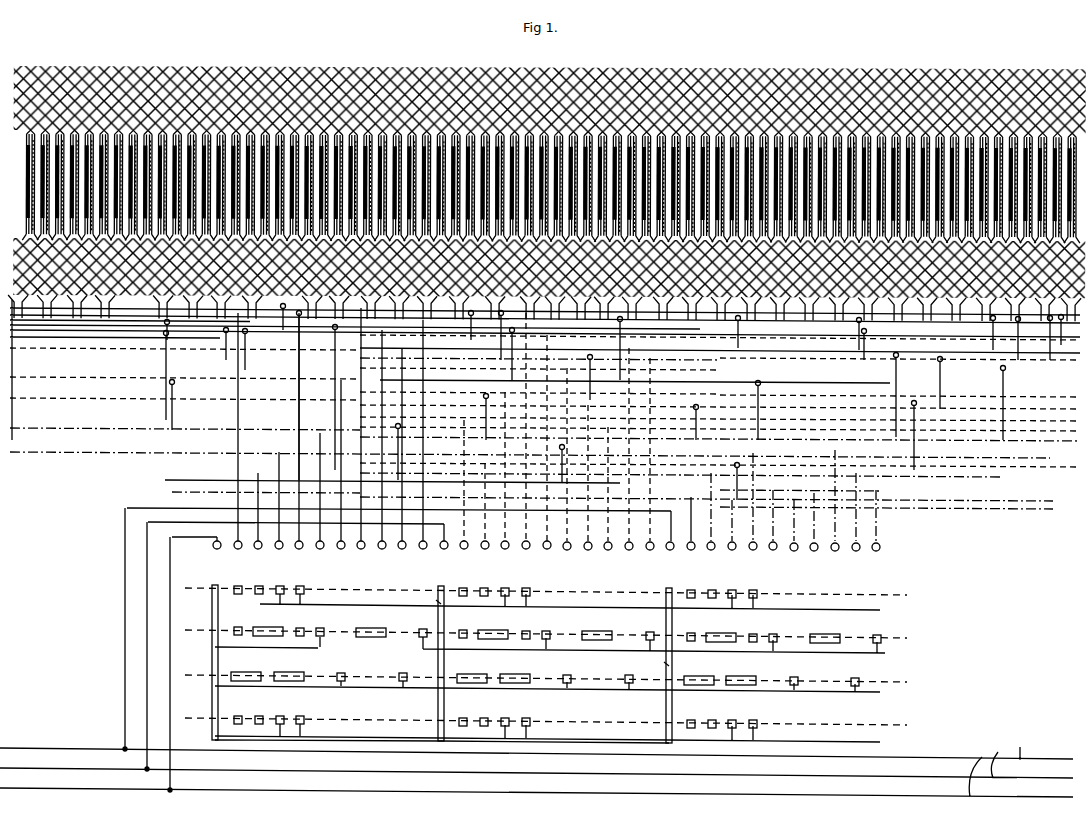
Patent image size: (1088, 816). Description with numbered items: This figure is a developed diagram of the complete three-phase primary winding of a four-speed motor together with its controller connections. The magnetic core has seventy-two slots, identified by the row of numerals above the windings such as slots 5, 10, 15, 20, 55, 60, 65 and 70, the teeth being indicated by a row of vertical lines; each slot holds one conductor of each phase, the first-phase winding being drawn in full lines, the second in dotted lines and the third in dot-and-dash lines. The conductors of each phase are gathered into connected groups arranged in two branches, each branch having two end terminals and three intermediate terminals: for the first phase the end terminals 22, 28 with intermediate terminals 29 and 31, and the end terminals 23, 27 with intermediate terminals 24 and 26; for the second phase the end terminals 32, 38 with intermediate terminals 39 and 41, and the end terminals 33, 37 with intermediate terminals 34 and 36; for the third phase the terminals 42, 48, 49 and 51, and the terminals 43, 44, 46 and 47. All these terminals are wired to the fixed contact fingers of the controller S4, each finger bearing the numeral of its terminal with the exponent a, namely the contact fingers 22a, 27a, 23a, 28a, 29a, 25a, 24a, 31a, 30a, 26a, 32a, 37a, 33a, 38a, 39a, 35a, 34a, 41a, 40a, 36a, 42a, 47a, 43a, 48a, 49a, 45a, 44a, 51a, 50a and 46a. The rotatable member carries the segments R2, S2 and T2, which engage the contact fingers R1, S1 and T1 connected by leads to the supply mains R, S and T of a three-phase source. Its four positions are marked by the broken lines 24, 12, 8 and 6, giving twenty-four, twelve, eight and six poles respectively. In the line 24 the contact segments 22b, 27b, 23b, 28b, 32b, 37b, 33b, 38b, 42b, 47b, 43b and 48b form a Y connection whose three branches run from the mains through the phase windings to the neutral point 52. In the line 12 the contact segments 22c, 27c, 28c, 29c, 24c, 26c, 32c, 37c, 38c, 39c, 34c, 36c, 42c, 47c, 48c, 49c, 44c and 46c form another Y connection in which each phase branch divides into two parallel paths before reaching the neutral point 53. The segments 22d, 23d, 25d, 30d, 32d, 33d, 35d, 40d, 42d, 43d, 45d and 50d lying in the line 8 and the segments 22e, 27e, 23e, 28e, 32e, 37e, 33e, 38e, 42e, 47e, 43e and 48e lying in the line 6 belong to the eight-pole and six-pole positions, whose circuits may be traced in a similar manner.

The slot 5 is at (89, 144).
The slot 10 is at (164, 144).
The slot 15 is at (238, 145).
The slot 20 is at (310, 145).
The slot 55 is at (823, 147).
The slot 60 is at (896, 148).
The slot 65 is at (970, 148).
The slot 70 is at (1043, 149).
The end terminal 22 is at (329, 398).
The end terminal 23 is at (853, 327).
The intermediate terminal 24 is at (555, 450).
The intermediate terminal 26 is at (499, 328).
The end terminal 27 is at (504, 351).
The end terminal 28 is at (1027, 334).
The intermediate terminal 29 is at (159, 375).
The intermediate terminal 31 is at (619, 340).
The end terminal 32 is at (494, 416).
The end terminal 33 is at (1002, 403).
The intermediate terminal 34 is at (179, 398).
The intermediate terminal 36 is at (590, 370).
The end terminal 37 is at (981, 329).
The end terminal 38 is at (472, 326).
The intermediate terminal 39 is at (932, 383).
The intermediate terminal 41 is at (704, 421).
The terminal 42 is at (1052, 338).
The terminal 43 is at (160, 327).
The terminal 44 is at (912, 428).
The terminal 46 is at (560, 458).
The terminal 47 is at (887, 393).
The terminal 48 is at (1069, 327).
The terminal 49 is at (729, 480).
The terminal 51 is at (759, 403).
The neutral point 52 is at (430, 601).
The neutral point 53 is at (660, 665).
The broken line 12 is at (555, 634).
The broken line 8 is at (554, 679).
The broken line 6 is at (554, 722).
The supply main R is at (536, 667).
The supply main S is at (536, 650).
The supply main T is at (536, 634).
The contact finger R1 is at (217, 550).
The contact finger S1 is at (444, 544).
The contact finger T1 is at (669, 538).
The contact segment R2 is at (210, 654).
The contact segment S2 is at (434, 653).
The contact segment T2 is at (661, 656).
The controller S4 is at (588, 679).
The contact finger 22a is at (240, 438).
The contact finger 27a is at (260, 518).
The contact finger 23a is at (281, 508).
The contact finger 28a is at (301, 438).
The contact finger 29a is at (322, 498).
The contact finger 25a is at (343, 472).
The contact finger 24a is at (363, 436).
The contact finger 31a is at (384, 447).
The contact finger 30a is at (404, 456).
The contact finger 26a is at (425, 442).
The contact finger 32a is at (466, 492).
The contact finger 37a is at (487, 513).
The contact finger 33a is at (507, 478).
The contact finger 38a is at (528, 438).
The contact finger 39a is at (549, 449).
The contact finger 35a is at (569, 466).
The contact finger 34a is at (590, 485).
The contact finger 41a is at (610, 496).
The contact finger 40a is at (631, 456).
The contact finger 36a is at (652, 461).
The contact finger 42a is at (693, 531).
The contact finger 47a is at (713, 519).
The contact finger 43a is at (734, 532).
The contact finger 48a is at (755, 509).
The contact finger 49a is at (775, 527).
The contact finger 45a is at (796, 533).
The contact finger 44a is at (816, 529).
The contact finger 51a is at (837, 508).
The contact finger 50a is at (858, 519).
The contact finger 46a is at (878, 528).
The contact segment 22b is at (239, 582).
The contact segment 27b is at (260, 582).
The contact segment 23b is at (281, 582).
The contact segment 28b is at (301, 582).
The contact segment 32b is at (464, 584).
The contact segment 37b is at (485, 584).
The contact segment 33b is at (506, 584).
The contact segment 38b is at (527, 584).
The contact segment 42b is at (692, 586).
The contact segment 47b is at (713, 586).
The contact segment 43b is at (733, 586).
The contact segment 48b is at (754, 586).
The contact segment 22c is at (238, 623).
The contact segment 27c is at (268, 623).
The contact segment 28c is at (300, 624).
The contact segment 29c is at (322, 624).
The contact segment 24c is at (371, 624).
The contact segment 26c is at (424, 625).
The contact segment 32c is at (464, 626).
The contact segment 37c is at (493, 626).
The contact segment 38c is at (526, 627).
The contact segment 39c is at (548, 627).
The contact segment 34c is at (597, 627).
The contact segment 36c is at (651, 628).
The contact segment 42c is at (692, 629).
The contact segment 47c is at (721, 629).
The contact segment 48c is at (753, 630).
The contact segment 49c is at (775, 630).
The contact segment 44c is at (825, 630).
The contact segment 46c is at (878, 631).
The switch contact 22d is at (246, 668).
The switch contact 23d is at (289, 668).
The switch contact 25d is at (343, 669).
The switch contact 30d is at (404, 669).
The switch contact 32d is at (472, 670).
The switch contact 33d is at (515, 670).
The switch contact 35d is at (569, 671).
The switch contact 40d is at (630, 671).
The switch contact 42d is at (699, 672).
The switch contact 43d is at (741, 672).
The switch contact 45d is at (795, 673).
The switch contact 50d is at (856, 674).
The switch contact 22e is at (239, 712).
The switch contact 27e is at (260, 712).
The switch contact 23e is at (281, 712).
The switch contact 28e is at (301, 712).
The switch contact 32e is at (464, 714).
The switch contact 37e is at (485, 714).
The switch contact 33e is at (506, 714).
The switch contact 38e is at (527, 714).
The switch contact 42e is at (692, 716).
The switch contact 47e is at (713, 716).
The switch contact 43e is at (733, 716).
The switch contact 48e is at (754, 716).